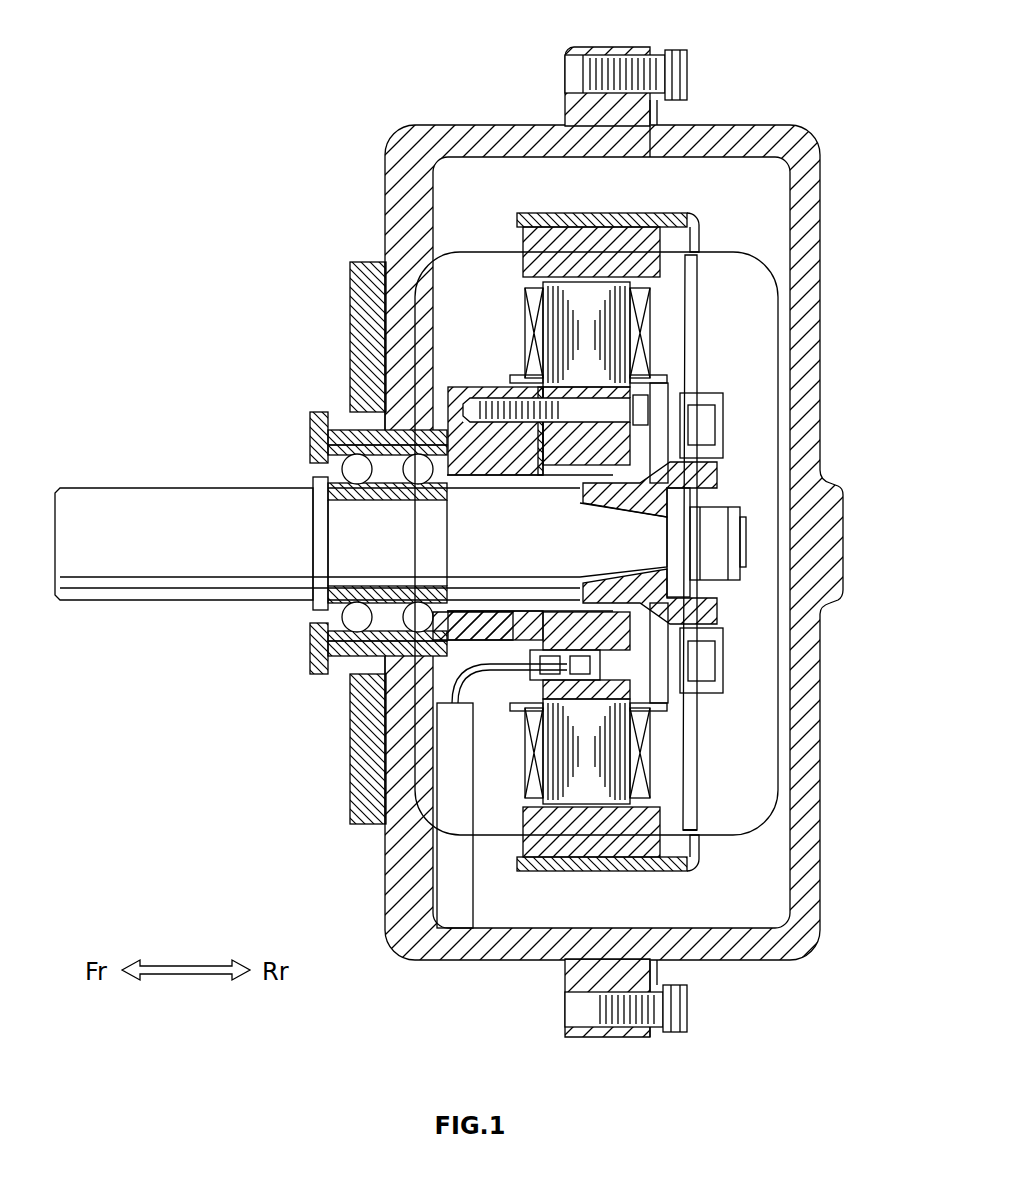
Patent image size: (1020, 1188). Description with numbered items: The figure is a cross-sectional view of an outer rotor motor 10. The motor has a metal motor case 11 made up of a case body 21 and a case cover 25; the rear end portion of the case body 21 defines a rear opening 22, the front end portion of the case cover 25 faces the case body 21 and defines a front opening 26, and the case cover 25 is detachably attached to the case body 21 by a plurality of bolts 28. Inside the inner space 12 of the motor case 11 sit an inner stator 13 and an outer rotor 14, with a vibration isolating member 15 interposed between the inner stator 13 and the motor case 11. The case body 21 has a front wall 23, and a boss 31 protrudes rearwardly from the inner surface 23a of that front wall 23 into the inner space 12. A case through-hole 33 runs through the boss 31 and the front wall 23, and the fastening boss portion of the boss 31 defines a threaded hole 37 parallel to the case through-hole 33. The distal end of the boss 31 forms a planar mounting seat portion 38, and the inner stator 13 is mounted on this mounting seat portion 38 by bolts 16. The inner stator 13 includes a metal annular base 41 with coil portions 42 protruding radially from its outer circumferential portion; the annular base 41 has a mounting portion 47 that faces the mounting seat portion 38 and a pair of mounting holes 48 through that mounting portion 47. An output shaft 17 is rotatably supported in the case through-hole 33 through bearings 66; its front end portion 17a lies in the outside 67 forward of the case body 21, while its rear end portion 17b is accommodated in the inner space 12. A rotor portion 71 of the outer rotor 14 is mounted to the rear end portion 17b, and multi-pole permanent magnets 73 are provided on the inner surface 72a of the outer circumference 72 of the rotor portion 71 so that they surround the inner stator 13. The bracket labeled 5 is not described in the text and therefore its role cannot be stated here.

The outer rotor motor 10 is at (380, 70).
The motor case 11 is at (484, 108).
The inner space 12 is at (755, 224).
The inner stator 13 is at (512, 306).
The outer rotor 14 is at (573, 543).
The vibration isolating member 15 is at (535, 453).
The bolts 16 is at (668, 392).
The output shaft 17 is at (130, 462).
The front end portion 17a is at (135, 565).
The rear end portion 17b is at (660, 535).
The case body 21 is at (385, 188).
The rear opening 22 is at (648, 158).
The front wall 23 is at (362, 350).
The inner surface 23a is at (433, 366).
The case cover 25 is at (820, 356).
The front opening 26 is at (658, 150).
The bolts 28 is at (688, 74).
The boss 31 is at (503, 632).
The case through-hole 33 is at (520, 610).
The threaded hole 37 is at (470, 412).
The mounting seat portion 38 is at (548, 458).
The annular base 41 is at (700, 422).
The coil portions 42 is at (690, 332).
The mounting portion 47 is at (751, 440).
The mounting holes 48 is at (592, 428).
The brake device 5 is at (777, 725).
The bearings 66 is at (398, 640).
The outside 67 is at (118, 774).
The rotor portion 71 is at (698, 700).
The outer circumference 72 is at (547, 875).
The inner surface 72a is at (590, 870).
The permanent magnets 73 is at (598, 226).